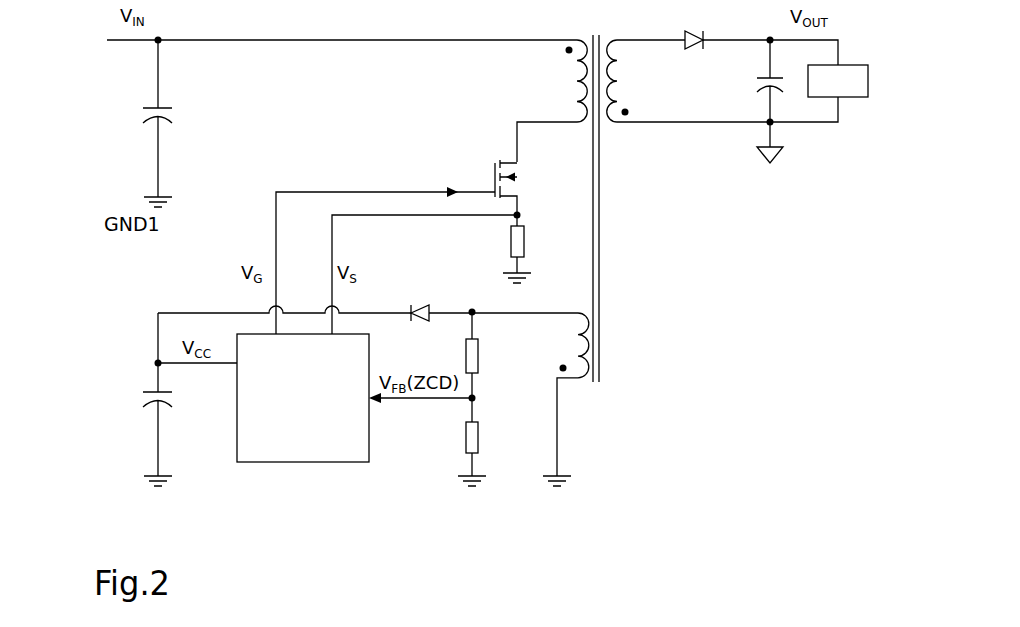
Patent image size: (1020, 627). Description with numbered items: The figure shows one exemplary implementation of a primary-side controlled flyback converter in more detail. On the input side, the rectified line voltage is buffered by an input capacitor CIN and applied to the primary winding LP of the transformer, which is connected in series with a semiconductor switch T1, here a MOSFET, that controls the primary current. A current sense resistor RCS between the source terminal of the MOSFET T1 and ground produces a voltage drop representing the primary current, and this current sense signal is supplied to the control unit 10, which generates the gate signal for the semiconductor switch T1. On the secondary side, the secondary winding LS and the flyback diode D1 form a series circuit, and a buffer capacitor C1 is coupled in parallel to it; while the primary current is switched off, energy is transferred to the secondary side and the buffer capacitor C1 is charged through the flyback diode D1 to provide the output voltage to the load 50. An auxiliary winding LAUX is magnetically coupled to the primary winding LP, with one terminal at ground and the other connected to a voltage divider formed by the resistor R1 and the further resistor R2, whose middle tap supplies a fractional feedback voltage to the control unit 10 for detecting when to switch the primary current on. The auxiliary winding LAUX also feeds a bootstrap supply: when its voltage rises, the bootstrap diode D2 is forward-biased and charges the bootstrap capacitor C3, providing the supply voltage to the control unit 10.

The control unit 10 is at (303, 398).
The load 50 is at (862, 99).
The buffer capacitor C1 is at (752, 81).
The flyback diode D1 is at (694, 28).
The resistor R1 is at (456, 356).
The further resistor R2 is at (456, 437).
The bootstrap diode D2 is at (420, 299).
The semiconductor switch T1 is at (522, 193).
The bootstrap capacitor C3 is at (174, 439).
The input capacitor CIN is at (175, 123).
The current sense resistor RCS is at (534, 254).
The primary winding LP is at (552, 101).
The secondary winding LS is at (633, 81).
The auxiliary winding LAUX is at (551, 399).